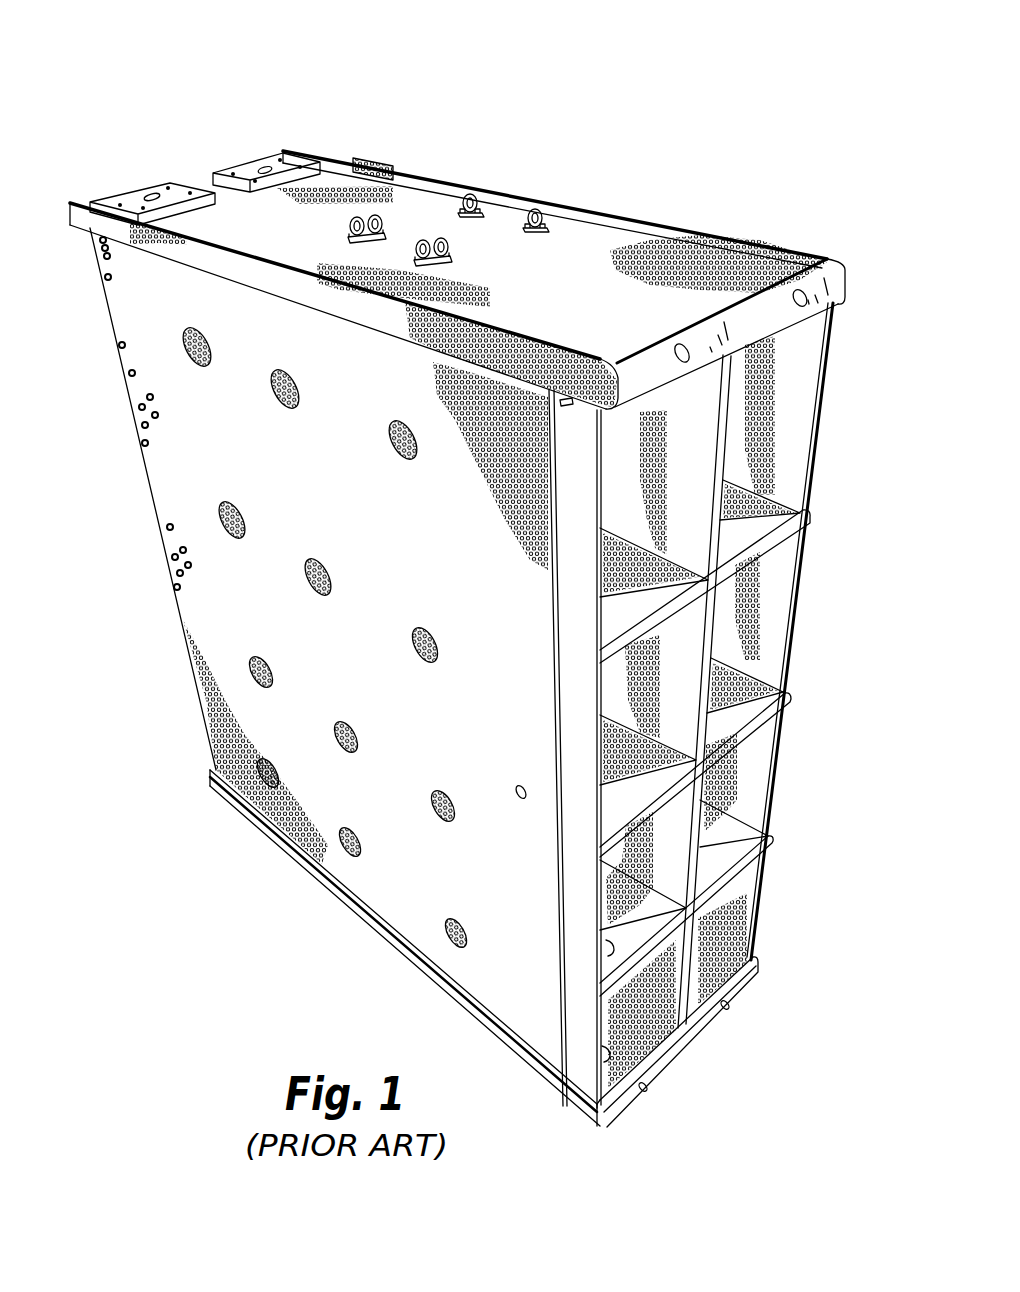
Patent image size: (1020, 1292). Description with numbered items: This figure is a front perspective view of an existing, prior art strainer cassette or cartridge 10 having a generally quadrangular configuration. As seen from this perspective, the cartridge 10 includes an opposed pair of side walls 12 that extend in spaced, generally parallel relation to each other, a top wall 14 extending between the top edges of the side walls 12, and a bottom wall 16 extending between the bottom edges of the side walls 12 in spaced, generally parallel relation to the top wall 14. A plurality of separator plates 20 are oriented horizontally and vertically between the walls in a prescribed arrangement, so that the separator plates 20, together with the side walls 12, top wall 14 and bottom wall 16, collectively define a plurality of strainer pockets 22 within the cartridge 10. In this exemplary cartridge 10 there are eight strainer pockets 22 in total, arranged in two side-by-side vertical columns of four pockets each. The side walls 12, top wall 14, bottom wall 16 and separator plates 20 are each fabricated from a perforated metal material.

The strainer cassette or cartridge 10 is at (474, 574).
The side walls 12 is at (752, 589).
The top wall 14 is at (393, 190).
The bottom wall 16 is at (730, 968).
The separator plates 20 is at (743, 837).
The strainer pockets 22 is at (603, 1048).